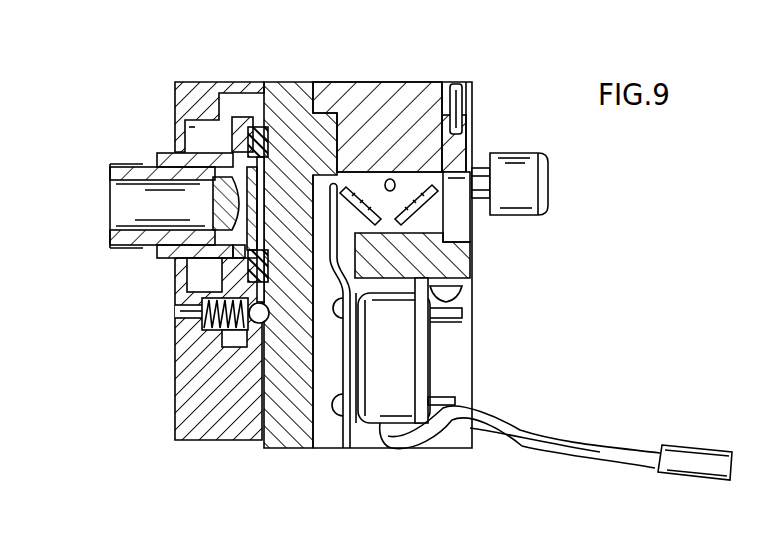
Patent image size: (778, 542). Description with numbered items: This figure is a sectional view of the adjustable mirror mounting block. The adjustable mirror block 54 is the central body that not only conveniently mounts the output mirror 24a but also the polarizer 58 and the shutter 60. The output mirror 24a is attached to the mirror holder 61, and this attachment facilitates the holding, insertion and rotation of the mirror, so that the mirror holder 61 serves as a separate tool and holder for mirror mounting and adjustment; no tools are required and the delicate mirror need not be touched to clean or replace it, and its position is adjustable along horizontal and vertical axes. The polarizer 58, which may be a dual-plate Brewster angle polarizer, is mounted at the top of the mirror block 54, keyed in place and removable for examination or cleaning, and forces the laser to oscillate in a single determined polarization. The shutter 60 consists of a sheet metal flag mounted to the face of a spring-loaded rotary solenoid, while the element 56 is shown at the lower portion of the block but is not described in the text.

The adjustable mirror block 54 is at (264, 81).
The housing block 56 is at (238, 442).
The polarizer 58 is at (428, 63).
The shutter 60 is at (375, 367).
The mirror holder 61 is at (110, 168).
The output mirror 24a is at (213, 205).